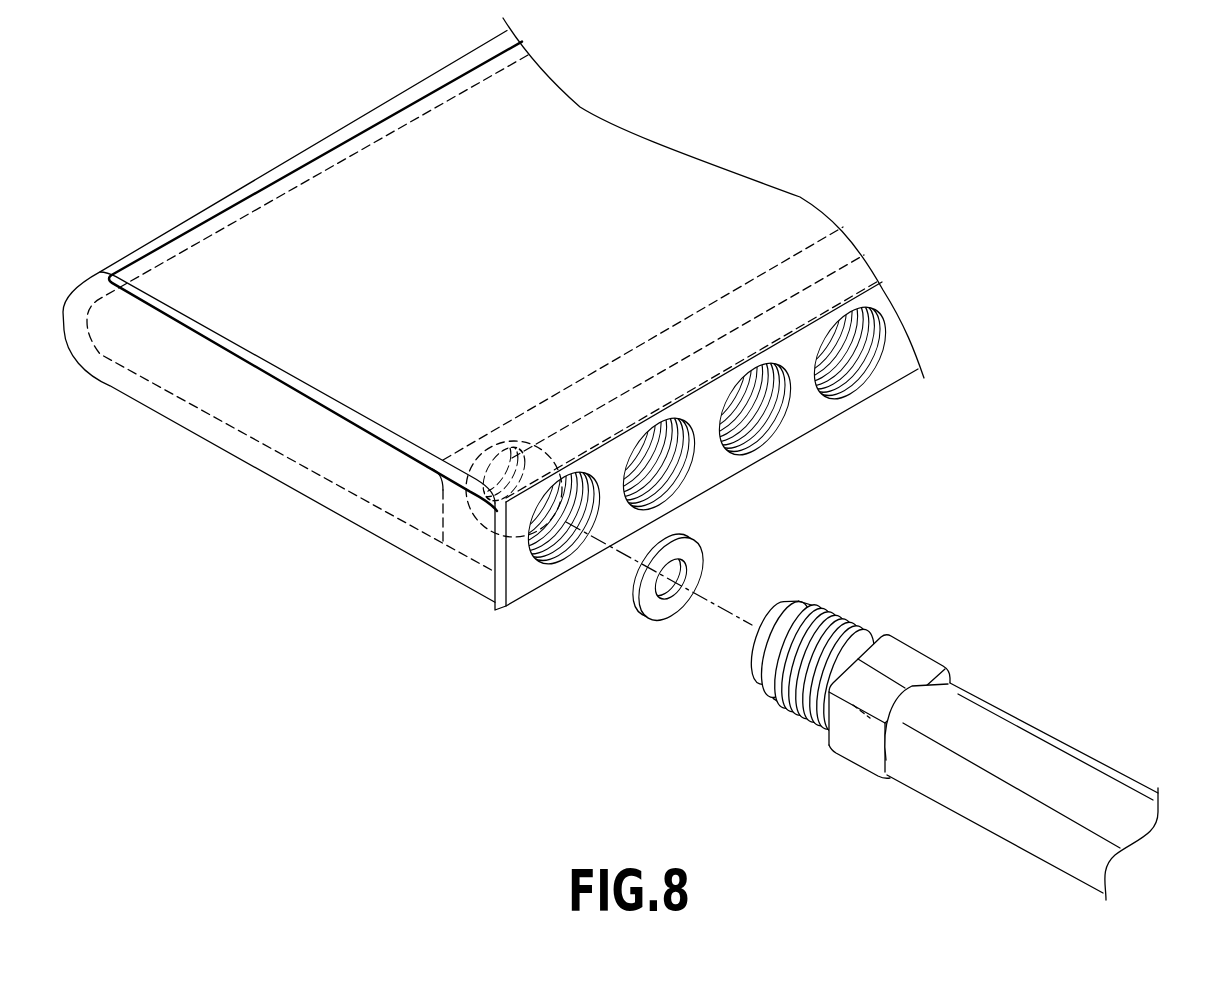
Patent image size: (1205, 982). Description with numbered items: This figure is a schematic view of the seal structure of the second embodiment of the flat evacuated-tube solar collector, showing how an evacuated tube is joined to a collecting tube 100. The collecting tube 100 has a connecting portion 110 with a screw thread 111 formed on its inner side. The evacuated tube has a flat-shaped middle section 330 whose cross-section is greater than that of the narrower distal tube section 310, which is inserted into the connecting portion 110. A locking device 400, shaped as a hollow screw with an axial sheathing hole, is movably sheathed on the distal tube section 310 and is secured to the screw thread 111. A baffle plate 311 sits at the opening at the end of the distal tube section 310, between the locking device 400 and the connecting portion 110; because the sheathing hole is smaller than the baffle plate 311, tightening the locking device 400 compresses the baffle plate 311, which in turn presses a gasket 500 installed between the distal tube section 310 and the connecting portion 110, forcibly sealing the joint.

The collecting tube 100 is at (293, 155).
The connecting portion 110 is at (478, 552).
The screw thread 111 is at (566, 528).
The gasket 500 is at (703, 560).
The baffle plate 311 is at (750, 650).
The distal tube section 310 is at (777, 700).
The locking device 400 is at (836, 613).
The middle section 330 is at (1050, 758).